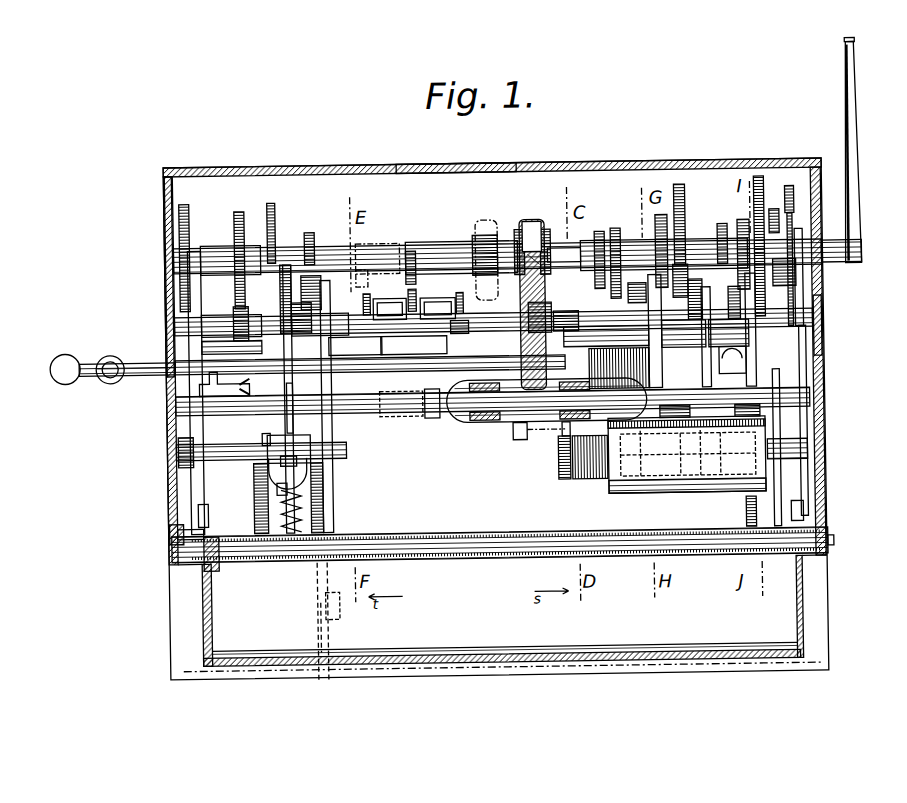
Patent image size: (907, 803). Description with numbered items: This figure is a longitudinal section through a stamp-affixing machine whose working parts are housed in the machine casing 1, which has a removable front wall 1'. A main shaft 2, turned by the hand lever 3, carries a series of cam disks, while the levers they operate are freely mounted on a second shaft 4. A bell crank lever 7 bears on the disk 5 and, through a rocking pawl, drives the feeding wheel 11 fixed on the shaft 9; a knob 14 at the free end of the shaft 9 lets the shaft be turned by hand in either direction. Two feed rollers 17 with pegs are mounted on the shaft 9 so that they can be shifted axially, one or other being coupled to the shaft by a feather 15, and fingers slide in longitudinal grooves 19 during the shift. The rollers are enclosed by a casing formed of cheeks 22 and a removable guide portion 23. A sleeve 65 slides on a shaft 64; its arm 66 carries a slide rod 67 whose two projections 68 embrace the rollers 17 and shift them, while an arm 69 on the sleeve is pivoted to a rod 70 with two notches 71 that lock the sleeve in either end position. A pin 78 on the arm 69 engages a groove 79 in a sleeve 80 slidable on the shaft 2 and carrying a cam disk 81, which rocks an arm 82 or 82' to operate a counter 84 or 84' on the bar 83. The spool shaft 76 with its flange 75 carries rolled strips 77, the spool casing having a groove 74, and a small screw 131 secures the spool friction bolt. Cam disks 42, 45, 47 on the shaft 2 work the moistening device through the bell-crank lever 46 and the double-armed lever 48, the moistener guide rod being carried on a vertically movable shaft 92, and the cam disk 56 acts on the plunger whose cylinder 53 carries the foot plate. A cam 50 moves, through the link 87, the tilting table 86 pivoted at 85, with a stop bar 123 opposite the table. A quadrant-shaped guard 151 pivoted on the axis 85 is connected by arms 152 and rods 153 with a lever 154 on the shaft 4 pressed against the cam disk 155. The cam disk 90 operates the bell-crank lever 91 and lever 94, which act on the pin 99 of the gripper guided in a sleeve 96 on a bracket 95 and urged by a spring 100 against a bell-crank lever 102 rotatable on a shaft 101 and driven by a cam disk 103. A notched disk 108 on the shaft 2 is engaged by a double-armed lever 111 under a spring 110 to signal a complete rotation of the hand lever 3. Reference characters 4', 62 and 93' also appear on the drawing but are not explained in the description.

The machine casing 1 is at (505, 419).
The front wall of the casing 1' is at (456, 180).
The shaft 2 is at (405, 258).
The hand lever 3 is at (862, 128).
The shaft 4 is at (156, 277).
The bearing 4' is at (562, 313).
The disk 5 is at (598, 295).
The bell crank lever 7 is at (590, 360).
The shaft 9 is at (799, 445).
The feeding wheel 11 is at (733, 420).
The knob 14 is at (568, 480).
The feather 15 is at (675, 492).
The feed roller 17 is at (710, 492).
The grooves 19 is at (755, 515).
The cheeks 22 is at (533, 259).
The guide portion 23 is at (636, 492).
The cam disk 42 is at (745, 220).
The cam disk 45 is at (658, 230).
The bell-crank lever 46 is at (636, 300).
The cam disk 47 is at (722, 236).
The double-armed lever 48 is at (777, 232).
The cam 50 is at (771, 188).
The cylinder 53 is at (720, 372).
The cam disk 56 is at (690, 186).
The gear 62 is at (610, 233).
The shaft 64 is at (355, 398).
The sleeve 65 is at (462, 424).
The arm 66 is at (560, 437).
The slide rod 67 is at (517, 440).
The projections 68 is at (760, 412).
The arm 69 is at (530, 288).
The rod 70 is at (170, 356).
The notches 71 is at (176, 368).
The groove 74 is at (737, 306).
The flange 75 is at (702, 300).
The shaft 76 is at (825, 330).
The rolled strip 77 is at (705, 333).
The pin 78 is at (553, 232).
The groove 79 is at (534, 222).
The sleeve 80 is at (470, 250).
The cam disk 81 is at (419, 293).
The arm 82 is at (465, 297).
The arm 82' is at (351, 303).
The bar 83 is at (300, 322).
The counter 84 is at (438, 299).
The counter 84' is at (390, 297).
The pivot 85 is at (834, 545).
The tilting table 86 is at (474, 559).
The link 87 is at (808, 360).
The cam disk 90 is at (314, 231).
The bell-crank lever 91 is at (344, 420).
The shaft 92 is at (322, 586).
The rod 93' is at (503, 682).
The lever 94 is at (333, 628).
The bracket 95 is at (253, 486).
The sleeve 96 is at (266, 462).
The pin 99 is at (300, 490).
The spring 100 is at (278, 500).
The shaft 101 is at (234, 440).
The bell-crank lever 102 is at (300, 384).
The cam disk 103 is at (274, 200).
The notched disk 108 is at (242, 208).
The spring 110 is at (250, 384).
The double-armed lever 111 is at (250, 305).
The stop bar 123 is at (170, 533).
The small screw 131 is at (495, 212).
The guard or shutter 151 is at (668, 652).
The arms 152 is at (803, 515).
The rods 153 is at (782, 438).
The lever 154 is at (803, 287).
The cam disk 155 is at (192, 202).